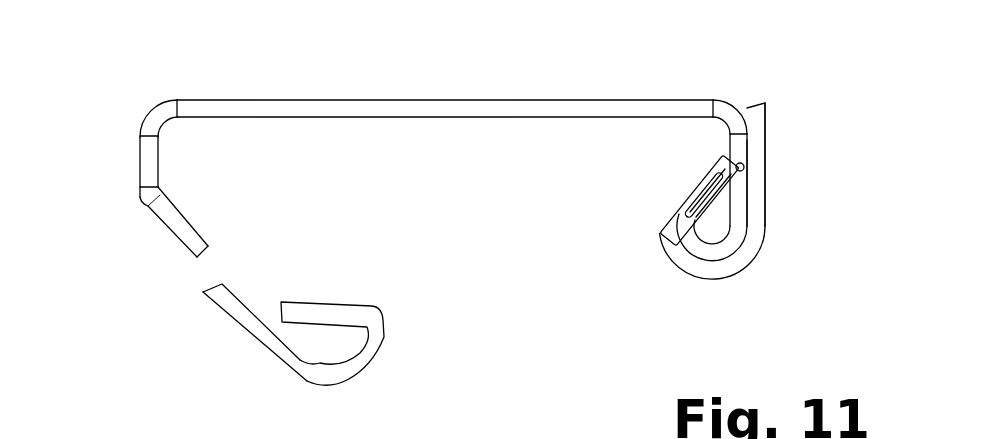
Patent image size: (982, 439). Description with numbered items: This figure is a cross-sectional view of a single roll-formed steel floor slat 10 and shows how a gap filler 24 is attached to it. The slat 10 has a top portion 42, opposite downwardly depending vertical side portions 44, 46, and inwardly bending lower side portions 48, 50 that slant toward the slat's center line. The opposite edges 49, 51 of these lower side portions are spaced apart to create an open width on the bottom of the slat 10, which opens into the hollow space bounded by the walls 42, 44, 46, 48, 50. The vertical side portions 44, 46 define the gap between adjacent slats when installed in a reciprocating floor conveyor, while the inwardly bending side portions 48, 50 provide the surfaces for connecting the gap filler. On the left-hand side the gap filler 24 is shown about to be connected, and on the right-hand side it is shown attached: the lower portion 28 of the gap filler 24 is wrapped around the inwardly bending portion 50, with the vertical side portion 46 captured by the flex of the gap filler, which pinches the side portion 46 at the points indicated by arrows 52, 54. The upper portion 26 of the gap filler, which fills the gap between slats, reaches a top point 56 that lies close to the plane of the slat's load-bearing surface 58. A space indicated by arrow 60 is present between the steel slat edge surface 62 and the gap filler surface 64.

The floor slat 10 is at (418, 92).
The top portion 42 is at (265, 100).
The vertical side portion 44 is at (145, 160).
The vertical side portion 46 is at (731, 147).
The inwardly bending lower side portion 48 is at (185, 227).
The edge 49 is at (207, 252).
The load-bearing surface 58 is at (477, 100).
The gap filler 24 is at (352, 276).
The upper portion 26 is at (241, 348).
The lower portion 28 is at (397, 352).
The inwardly bending lower side portion 50 is at (660, 238).
The edge 51 is at (678, 268).
The pinch point 52 is at (727, 166).
The pinch point 54 is at (765, 170).
The top point 56 is at (757, 104).
The space 60 is at (715, 192).
The slat edge surface 62 is at (683, 211).
The gap filler surface 64 is at (705, 215).